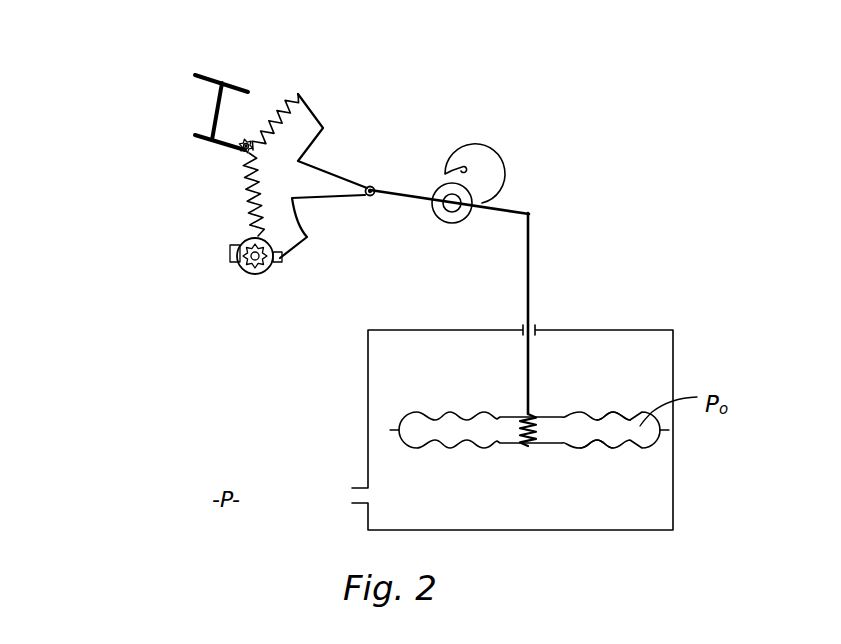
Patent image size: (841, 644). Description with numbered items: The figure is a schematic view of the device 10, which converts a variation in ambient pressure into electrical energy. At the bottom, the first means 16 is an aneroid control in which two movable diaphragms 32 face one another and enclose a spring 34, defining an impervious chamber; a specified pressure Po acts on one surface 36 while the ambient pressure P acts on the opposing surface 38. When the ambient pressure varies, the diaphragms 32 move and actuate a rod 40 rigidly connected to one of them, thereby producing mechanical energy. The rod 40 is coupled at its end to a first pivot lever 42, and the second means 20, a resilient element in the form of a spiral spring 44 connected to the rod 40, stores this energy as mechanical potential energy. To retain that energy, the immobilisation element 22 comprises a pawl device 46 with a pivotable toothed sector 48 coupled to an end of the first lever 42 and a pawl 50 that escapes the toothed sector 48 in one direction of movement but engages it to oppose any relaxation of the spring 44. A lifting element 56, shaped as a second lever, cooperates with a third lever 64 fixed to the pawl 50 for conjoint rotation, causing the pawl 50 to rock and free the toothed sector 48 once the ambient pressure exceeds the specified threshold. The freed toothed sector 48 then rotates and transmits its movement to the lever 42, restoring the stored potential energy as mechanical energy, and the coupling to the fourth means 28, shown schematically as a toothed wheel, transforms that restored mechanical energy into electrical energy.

The device 10 is at (478, 118).
The first means 16 is at (682, 491).
The second means 20 is at (406, 178).
The immobilisation element 22 is at (128, 226).
The fourth means 28 is at (232, 262).
The movable diaphragm 32 is at (393, 408).
The spring 34 is at (545, 423).
The surface 36 is at (603, 412).
The opposing surface 38 is at (638, 448).
The rod 40 is at (531, 272).
The first pivot lever 42 is at (504, 230).
The spiral spring 44 is at (479, 187).
The pawl device 46 is at (239, 177).
The toothed sector 48 is at (287, 182).
The pawl 50 is at (248, 142).
The lifting element 56 is at (216, 108).
The third lever 64 is at (211, 143).